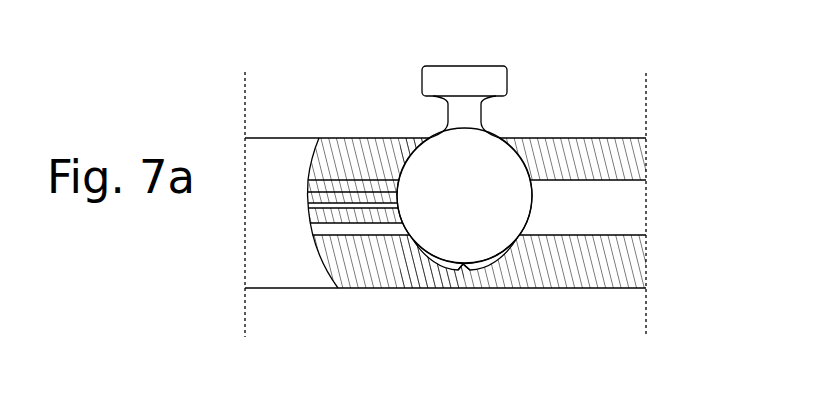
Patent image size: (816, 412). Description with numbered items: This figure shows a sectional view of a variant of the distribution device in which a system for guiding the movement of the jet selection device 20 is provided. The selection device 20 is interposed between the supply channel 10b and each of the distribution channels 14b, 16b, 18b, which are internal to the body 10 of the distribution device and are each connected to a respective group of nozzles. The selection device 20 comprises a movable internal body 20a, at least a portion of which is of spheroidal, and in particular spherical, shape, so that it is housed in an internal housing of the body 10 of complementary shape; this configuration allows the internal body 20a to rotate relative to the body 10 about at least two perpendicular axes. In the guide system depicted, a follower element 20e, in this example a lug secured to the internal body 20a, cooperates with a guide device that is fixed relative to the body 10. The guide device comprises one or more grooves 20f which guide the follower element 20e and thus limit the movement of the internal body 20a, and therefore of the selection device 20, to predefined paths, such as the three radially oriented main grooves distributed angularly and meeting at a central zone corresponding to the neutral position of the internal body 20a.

The body 10 is at (584, 298).
The supply channel 10b is at (603, 217).
The distribution channel 14b is at (353, 232).
The distribution channel 16b is at (340, 208).
The distribution channel 18b is at (321, 137).
The jet selection device 20 is at (532, 99).
The internal body 20a is at (492, 185).
The follower element 20e is at (462, 278).
The groove 20f is at (503, 262).